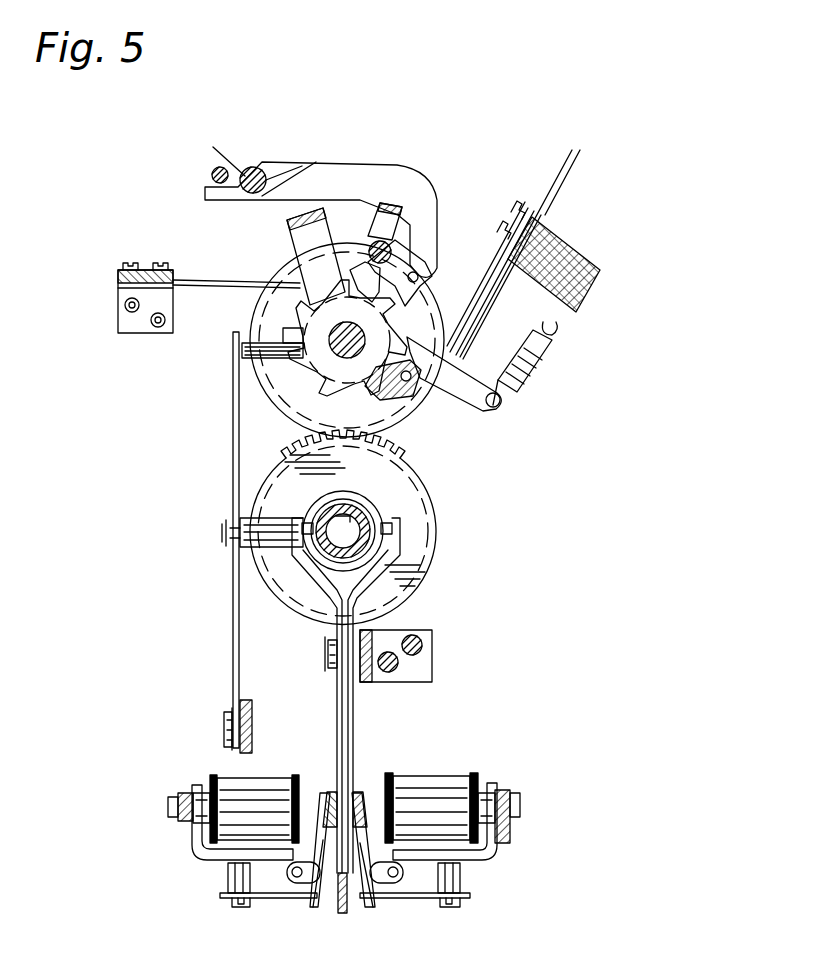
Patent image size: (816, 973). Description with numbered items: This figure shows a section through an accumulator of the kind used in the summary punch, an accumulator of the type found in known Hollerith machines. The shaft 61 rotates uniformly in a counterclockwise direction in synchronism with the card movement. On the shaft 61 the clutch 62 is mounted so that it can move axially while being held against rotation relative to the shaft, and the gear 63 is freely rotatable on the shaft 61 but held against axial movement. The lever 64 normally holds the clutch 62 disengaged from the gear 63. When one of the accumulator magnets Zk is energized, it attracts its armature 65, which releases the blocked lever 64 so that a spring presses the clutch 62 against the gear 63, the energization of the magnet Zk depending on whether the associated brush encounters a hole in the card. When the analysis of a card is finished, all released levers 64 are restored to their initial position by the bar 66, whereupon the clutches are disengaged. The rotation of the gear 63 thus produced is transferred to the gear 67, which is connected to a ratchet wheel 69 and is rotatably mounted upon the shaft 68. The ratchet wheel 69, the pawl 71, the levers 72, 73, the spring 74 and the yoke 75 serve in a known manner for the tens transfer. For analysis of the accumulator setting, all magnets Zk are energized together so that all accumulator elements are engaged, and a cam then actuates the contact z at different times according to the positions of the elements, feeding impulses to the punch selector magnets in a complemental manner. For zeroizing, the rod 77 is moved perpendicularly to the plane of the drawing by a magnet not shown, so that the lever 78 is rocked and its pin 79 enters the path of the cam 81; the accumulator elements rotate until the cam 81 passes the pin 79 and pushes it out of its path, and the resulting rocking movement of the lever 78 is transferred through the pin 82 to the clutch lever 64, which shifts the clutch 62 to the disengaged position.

The lever 72 is at (410, 182).
The lever 73 is at (398, 213).
The pawl 71 is at (403, 262).
The yoke 75 is at (298, 233).
The cam 81 is at (292, 332).
The pin 79 is at (250, 350).
The shaft 68 is at (338, 350).
The ratchet wheel 69 is at (318, 387).
The gear 67 is at (405, 405).
The spring 74 is at (527, 375).
The contact z is at (465, 337).
The gear 63 is at (410, 482).
The clutch 62 is at (378, 536).
The shaft 61 is at (372, 523).
The lever 64 is at (353, 738).
The pin 82 is at (226, 531).
The lever 78 is at (233, 632).
The rod 77 is at (253, 734).
The accumulator magnet Zk is at (212, 780).
The armature 65 is at (308, 878).
The bar 66 is at (350, 898).